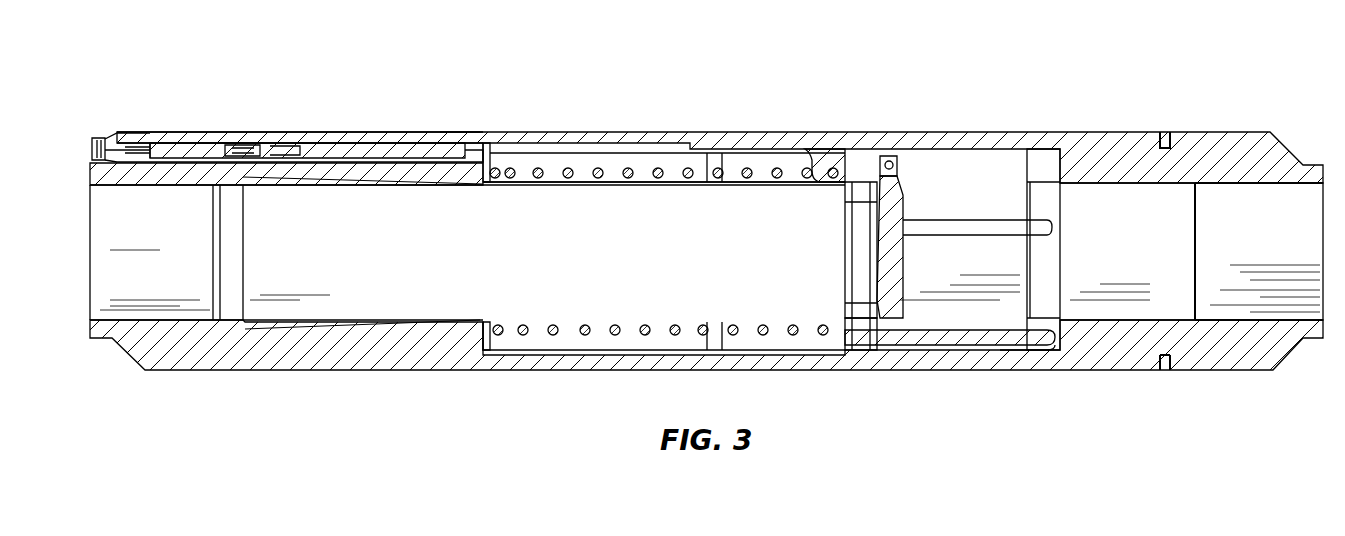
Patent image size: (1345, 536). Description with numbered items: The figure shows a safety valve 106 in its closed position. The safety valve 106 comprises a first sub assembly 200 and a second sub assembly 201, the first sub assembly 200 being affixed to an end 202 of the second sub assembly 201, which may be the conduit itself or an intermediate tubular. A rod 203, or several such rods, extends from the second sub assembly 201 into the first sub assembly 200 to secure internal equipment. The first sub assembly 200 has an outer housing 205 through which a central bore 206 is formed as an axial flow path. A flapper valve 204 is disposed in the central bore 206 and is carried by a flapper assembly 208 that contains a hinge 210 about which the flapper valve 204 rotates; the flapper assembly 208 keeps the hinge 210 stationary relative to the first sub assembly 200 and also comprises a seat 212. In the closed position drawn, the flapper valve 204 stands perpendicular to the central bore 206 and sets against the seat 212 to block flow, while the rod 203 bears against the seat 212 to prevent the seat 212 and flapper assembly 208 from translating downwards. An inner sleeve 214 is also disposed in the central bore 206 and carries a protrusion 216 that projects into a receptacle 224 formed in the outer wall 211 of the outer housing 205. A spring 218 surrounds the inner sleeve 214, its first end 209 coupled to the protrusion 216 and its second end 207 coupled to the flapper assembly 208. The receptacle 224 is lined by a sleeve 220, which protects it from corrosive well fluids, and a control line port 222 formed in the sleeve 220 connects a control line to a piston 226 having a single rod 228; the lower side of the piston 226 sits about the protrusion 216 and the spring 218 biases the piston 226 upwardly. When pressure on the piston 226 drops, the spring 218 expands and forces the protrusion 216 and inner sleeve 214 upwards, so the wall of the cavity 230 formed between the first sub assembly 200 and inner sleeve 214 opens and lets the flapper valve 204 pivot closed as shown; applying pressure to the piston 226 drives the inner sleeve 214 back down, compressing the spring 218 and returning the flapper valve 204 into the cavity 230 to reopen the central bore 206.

The safety valve 106 is at (758, 70).
The first sub assembly 200 is at (305, 374).
The second sub assembly 201 is at (1250, 145).
The end 202 is at (1175, 135).
The rod 203 is at (962, 355).
The flapper valve 204 is at (905, 200).
The outer housing 205 is at (238, 372).
The central bore 206 is at (95, 253).
The second end 207 is at (835, 180).
The flapper assembly 208 is at (848, 150).
The first end 209 is at (495, 178).
The hinge 210 is at (893, 156).
The outer wall 211 is at (455, 140).
The seat 212 is at (865, 322).
The inner sleeve 214 is at (368, 325).
The protrusion 216 is at (487, 160).
The spring 218 is at (580, 168).
The sleeve 220 is at (140, 133).
The control line port 222 is at (95, 140).
The receptacle 224 is at (300, 140).
The piston 226 is at (232, 148).
The rod 228 is at (372, 150).
The cavity 230 is at (1005, 178).